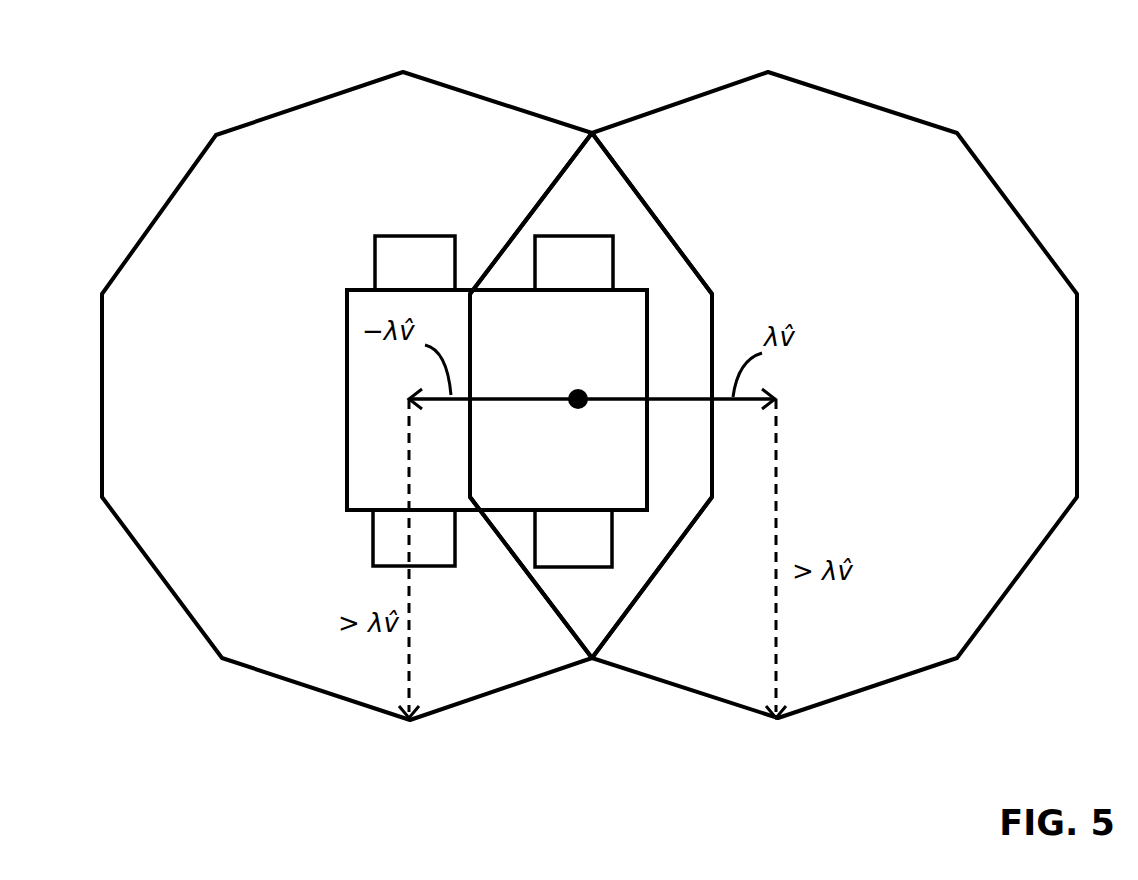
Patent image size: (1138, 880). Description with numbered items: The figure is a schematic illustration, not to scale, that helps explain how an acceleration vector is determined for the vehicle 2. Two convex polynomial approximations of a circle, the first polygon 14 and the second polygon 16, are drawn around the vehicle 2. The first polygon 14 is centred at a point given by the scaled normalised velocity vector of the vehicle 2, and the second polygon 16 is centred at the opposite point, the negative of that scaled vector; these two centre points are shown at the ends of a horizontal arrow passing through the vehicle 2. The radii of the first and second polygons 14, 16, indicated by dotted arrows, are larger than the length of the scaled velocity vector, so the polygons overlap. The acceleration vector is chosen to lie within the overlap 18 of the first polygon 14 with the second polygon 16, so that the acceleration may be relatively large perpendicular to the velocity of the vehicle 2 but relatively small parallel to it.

The vehicle 2 is at (347, 373).
The first polygon 14 is at (715, 90).
The second polygon 16 is at (300, 104).
The overlap 18 is at (593, 170).